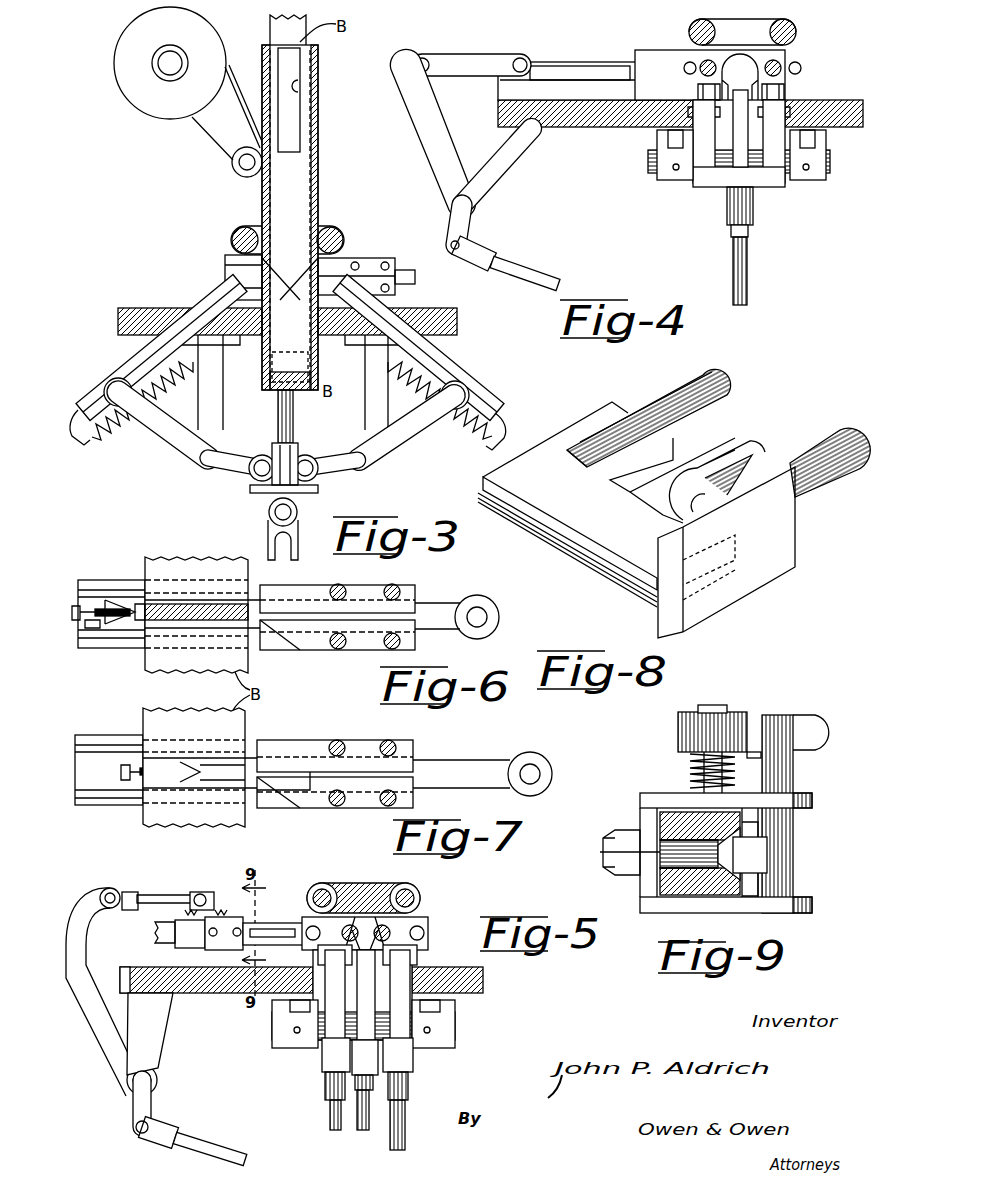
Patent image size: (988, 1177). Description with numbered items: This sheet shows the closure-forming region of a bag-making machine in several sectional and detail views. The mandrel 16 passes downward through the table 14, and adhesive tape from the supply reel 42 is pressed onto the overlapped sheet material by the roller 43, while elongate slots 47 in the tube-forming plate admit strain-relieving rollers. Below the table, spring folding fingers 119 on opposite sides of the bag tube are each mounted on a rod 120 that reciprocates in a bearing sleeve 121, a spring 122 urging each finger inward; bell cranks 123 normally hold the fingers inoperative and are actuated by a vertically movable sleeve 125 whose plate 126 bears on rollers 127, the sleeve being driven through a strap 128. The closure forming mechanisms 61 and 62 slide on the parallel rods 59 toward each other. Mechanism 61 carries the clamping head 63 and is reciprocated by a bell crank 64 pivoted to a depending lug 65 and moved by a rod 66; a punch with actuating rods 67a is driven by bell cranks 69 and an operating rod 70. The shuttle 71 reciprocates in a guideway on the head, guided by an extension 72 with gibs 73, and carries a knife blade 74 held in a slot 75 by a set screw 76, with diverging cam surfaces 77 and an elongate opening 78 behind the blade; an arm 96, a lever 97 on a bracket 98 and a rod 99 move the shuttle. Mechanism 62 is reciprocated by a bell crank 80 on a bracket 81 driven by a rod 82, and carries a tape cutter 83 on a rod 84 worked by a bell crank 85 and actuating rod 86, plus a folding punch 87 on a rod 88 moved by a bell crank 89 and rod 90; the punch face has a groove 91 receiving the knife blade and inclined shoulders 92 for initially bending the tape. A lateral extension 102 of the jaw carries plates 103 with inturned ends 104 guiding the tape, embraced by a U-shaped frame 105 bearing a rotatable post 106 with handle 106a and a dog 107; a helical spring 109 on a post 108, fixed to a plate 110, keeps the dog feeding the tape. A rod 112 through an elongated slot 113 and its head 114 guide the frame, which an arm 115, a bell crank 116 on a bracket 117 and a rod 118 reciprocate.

In FIG. 3, the table 14 is at (436, 314).
In FIG. 4, the table 14 is at (604, 126).
In FIG. 5, the table 14 is at (480, 991).
In FIG. 3, the mandrel 16 is at (320, 140).
In FIG. 3, the supply reel 42 is at (154, 103).
In FIG. 3, the roller 43 is at (236, 172).
In FIG. 3, the elongate slots 47 is at (306, 92).
In FIG. 4, the parallel rods 59 is at (797, 36).
In FIG. 5, the parallel rods 59 is at (421, 895).
In FIG. 4, the closure forming mechanism 61 is at (692, 22).
In FIG. 5, the closure forming mechanism 62 is at (364, 882).
In FIG. 6, the clamping head 63 is at (112, 598).
In FIG. 4, the bell crank 64 is at (740, 135).
In FIG. 4, the depending lug 65 is at (740, 65).
In FIG. 4, the rod 66 is at (748, 282).
In FIG. 4, the actuating rods 67a is at (796, 80).
In FIG. 4, the bell cranks 69 is at (672, 180).
In FIG. 4, the operating rod 70 is at (730, 250).
In FIG. 6, the shuttle 71 is at (445, 600).
In FIG. 7, the shuttle 71 is at (455, 764).
In FIG. 6, the extension 72 is at (352, 590).
In FIG. 6, the gibs 73 is at (410, 636).
In FIG. 6, the knife blade 74 is at (98, 608).
In FIG. 6, the slot 75 is at (95, 630).
In FIG. 6, the set screw 76 is at (76, 606).
In FIG. 6, the cam surfaces 77 is at (125, 604).
In FIG. 6, the elongate opening 78 is at (258, 600).
In FIG. 5, the bell crank 80 is at (362, 998).
In FIG. 5, the bracket 81 is at (373, 922).
In FIG. 5, the rod 82 is at (362, 1122).
In FIG. 8, the tape cutter 83 is at (750, 588).
In FIG. 8, the rod 84 is at (832, 437).
In FIG. 5, the rod 84 is at (340, 886).
In FIG. 5, the bell crank 85 is at (330, 985).
In FIG. 5, the actuating rod 86 is at (328, 1108).
In FIG. 8, the folding punch 87 is at (563, 440).
In FIG. 8, the rod 88 is at (683, 395).
In FIG. 5, the rod 88 is at (428, 924).
In FIG. 5, the bell crank 89 is at (408, 1010).
In FIG. 5, the rod 90 is at (396, 1122).
In FIG. 8, the elongate groove 91 is at (635, 590).
In FIG. 8, the shoulders 92 is at (580, 560).
In FIG. 4, the arm 96 is at (468, 62).
In FIG. 4, the lever 97 is at (428, 150).
In FIG. 4, the bracket 98 is at (500, 170).
In FIG. 4, the rod 99 is at (532, 266).
In FIG. 9, the lateral extension 102 is at (670, 888).
In FIG. 9, the plates 103 is at (698, 898).
In FIG. 3, the inturned ends 104 is at (470, 390).
In FIG. 9, the inturned ends 104 is at (745, 888).
In FIG. 9, the U-shaped frame 105 is at (656, 797).
In FIG. 9, the rotatable post 106 is at (795, 768).
In FIG. 9, the handle 106a is at (826, 722).
In FIG. 9, the dog 107 is at (753, 856).
In FIG. 9, the post 108 is at (710, 706).
In FIG. 9, the helical spring 109 is at (690, 768).
In FIG. 9, the plate 110 is at (756, 748).
In FIG. 9, the rod 112 is at (665, 828).
In FIG. 9, the elongated slot 113 is at (682, 842).
In FIG. 5, the elongated slot 113 is at (270, 920).
In FIG. 9, the head 114 is at (724, 882).
In FIG. 5, the arm 115 is at (156, 896).
In FIG. 5, the bell crank 116 is at (98, 1020).
In FIG. 5, the bracket 117 is at (160, 1030).
In FIG. 5, the rod 118 is at (218, 1152).
In FIG. 3, the spring folding fingers 119 is at (222, 302).
In FIG. 3, the rod 120 is at (400, 368).
In FIG. 3, the bearing sleeve 121 is at (392, 304).
In FIG. 3, the spring 122 is at (450, 435).
In FIG. 3, the bell cranks 123 is at (380, 455).
In FIG. 3, the sleeve 125 is at (298, 452).
In FIG. 3, the plate 126 is at (318, 488).
In FIG. 3, the rollers 127 is at (252, 480).
In FIG. 3, the strap 128 is at (268, 535).